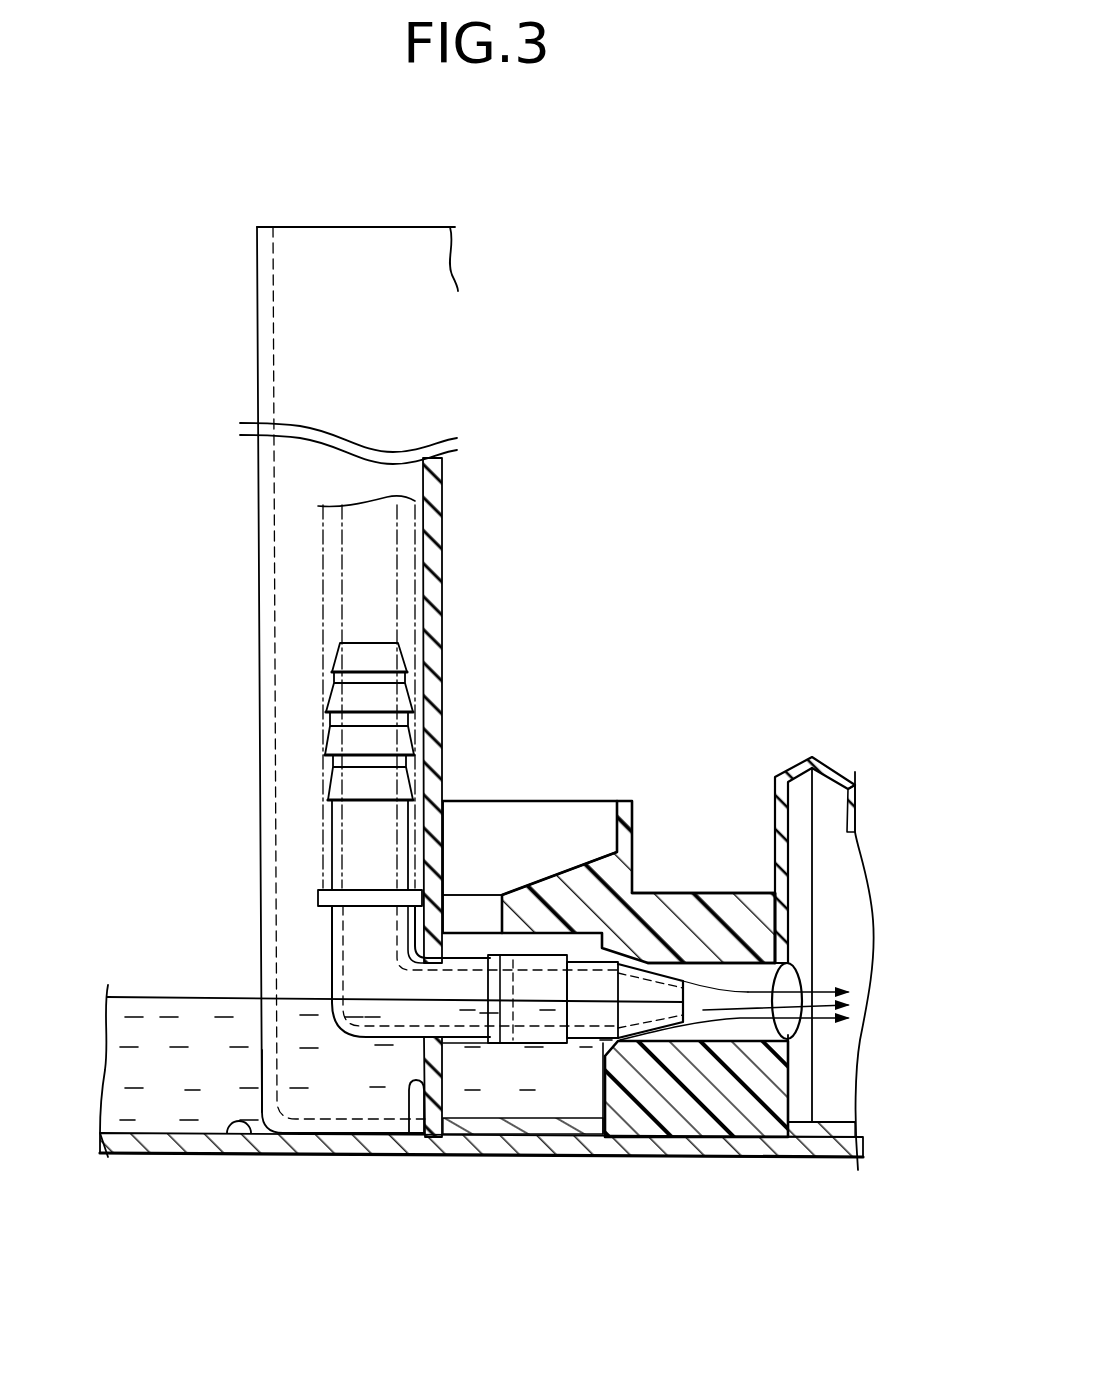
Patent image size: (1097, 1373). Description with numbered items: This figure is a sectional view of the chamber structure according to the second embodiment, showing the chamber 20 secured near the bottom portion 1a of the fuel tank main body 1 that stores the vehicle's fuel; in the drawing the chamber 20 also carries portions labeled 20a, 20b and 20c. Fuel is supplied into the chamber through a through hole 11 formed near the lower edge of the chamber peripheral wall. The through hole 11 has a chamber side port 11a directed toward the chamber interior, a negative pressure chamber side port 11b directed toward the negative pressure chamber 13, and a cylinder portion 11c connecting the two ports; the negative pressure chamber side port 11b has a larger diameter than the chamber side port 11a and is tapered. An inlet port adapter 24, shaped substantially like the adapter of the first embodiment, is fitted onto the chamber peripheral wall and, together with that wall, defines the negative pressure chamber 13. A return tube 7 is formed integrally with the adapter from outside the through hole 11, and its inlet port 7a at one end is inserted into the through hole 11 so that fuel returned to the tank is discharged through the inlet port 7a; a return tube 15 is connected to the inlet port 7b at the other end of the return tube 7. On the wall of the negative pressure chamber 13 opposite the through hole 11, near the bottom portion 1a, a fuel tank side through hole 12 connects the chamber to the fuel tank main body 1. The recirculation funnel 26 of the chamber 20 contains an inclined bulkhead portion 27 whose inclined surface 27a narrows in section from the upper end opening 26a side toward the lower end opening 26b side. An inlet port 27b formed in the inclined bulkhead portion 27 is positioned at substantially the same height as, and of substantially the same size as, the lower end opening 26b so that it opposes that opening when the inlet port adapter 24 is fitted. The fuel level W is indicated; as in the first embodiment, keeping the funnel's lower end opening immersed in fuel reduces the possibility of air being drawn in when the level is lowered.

The fuel tank main body 1 is at (157, 1080).
The bottom portion 1a is at (250, 1135).
The return tube 7 is at (327, 938).
The inlet port 7a is at (682, 978).
The inlet port 7b is at (330, 690).
The through hole 11 is at (728, 968).
The chamber side port 11a is at (787, 965).
The negative pressure chamber side port 11b is at (603, 1052).
The cylinder portion 11c is at (732, 1030).
The fuel tank side through hole 12 is at (410, 1140).
The negative pressure chamber 13 is at (545, 1090).
The return tube 15 is at (318, 543).
The chamber 20 is at (252, 220).
The casing side wall 20a is at (256, 752).
The casing upper portion 20b is at (412, 226).
The casing lower wall 20c is at (257, 812).
The inlet port adapter 24 is at (560, 1147).
The recirculation funnel 26 is at (655, 800).
The upper end opening 26a is at (617, 800).
The lower end opening 26b is at (507, 1010).
The inclined bulkhead portion 27 is at (585, 722).
The inclined surface 27a is at (555, 880).
The inlet port 27b is at (470, 895).
The fuel level W is at (142, 997).